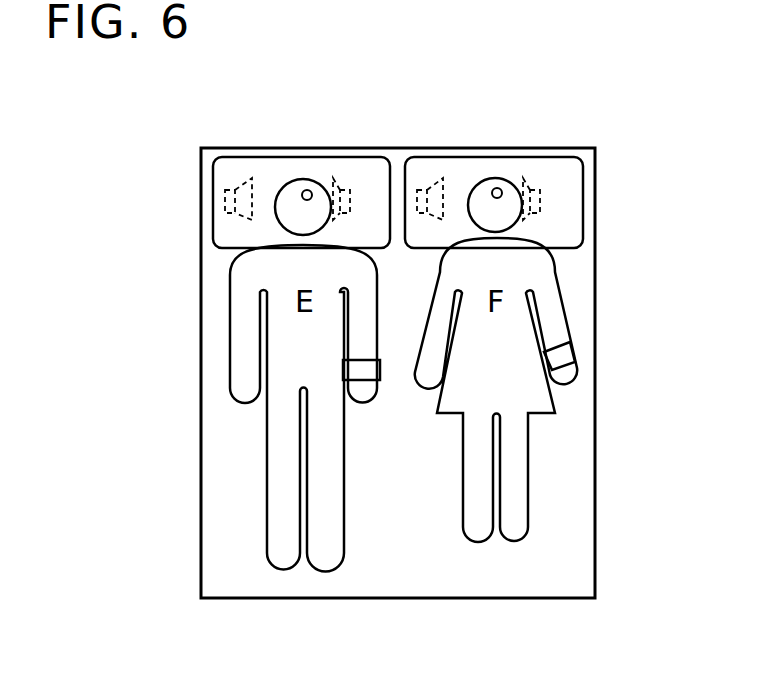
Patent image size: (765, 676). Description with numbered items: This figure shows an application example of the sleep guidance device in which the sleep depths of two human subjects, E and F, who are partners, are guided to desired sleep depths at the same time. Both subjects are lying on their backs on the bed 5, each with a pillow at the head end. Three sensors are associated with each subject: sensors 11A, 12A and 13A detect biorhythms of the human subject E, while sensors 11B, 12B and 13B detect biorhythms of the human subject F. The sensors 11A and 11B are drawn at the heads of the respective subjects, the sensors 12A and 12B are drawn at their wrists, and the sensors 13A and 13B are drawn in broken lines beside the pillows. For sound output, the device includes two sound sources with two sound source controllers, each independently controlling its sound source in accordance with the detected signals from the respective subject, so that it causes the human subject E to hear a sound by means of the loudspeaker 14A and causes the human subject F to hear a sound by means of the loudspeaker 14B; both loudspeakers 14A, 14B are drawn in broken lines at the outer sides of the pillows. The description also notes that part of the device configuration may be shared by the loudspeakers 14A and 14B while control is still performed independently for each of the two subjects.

The bed 5 is at (201, 318).
The sensor 11A is at (306, 190).
The sensor 11B is at (497, 188).
The sensor 12A is at (380, 370).
The sensor 12B is at (572, 352).
The sensor 13A is at (350, 175).
The sensor 13B is at (541, 175).
The loudspeaker 14A is at (230, 178).
The loudspeaker 14B is at (421, 178).